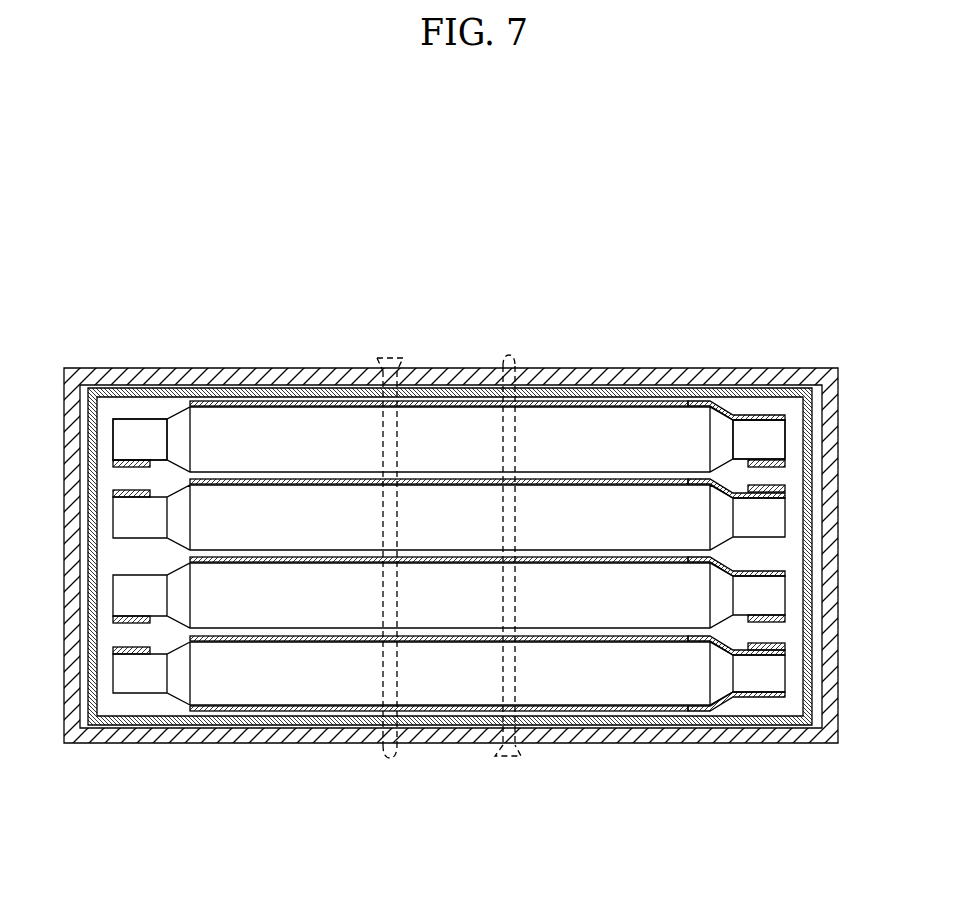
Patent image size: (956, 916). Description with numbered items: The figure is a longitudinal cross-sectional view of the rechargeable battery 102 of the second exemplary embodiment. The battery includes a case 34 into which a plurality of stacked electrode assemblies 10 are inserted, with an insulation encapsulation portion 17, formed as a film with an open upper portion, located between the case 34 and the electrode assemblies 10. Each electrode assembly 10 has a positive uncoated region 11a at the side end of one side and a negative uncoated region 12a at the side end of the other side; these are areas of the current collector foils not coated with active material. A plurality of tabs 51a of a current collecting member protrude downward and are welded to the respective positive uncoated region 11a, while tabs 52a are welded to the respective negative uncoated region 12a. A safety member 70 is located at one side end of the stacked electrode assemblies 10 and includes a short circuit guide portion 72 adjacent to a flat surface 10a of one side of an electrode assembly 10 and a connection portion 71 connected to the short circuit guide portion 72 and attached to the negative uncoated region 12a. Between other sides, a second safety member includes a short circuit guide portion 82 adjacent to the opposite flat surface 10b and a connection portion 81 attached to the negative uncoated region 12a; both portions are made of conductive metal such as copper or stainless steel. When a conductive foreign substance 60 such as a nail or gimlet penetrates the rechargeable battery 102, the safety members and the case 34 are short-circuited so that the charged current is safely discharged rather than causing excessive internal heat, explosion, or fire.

The rechargeable battery 102 is at (472, 221).
The electrode assembly 10 is at (449, 572).
The flat surface of one side of the electrode assembly 10a is at (347, 708).
The flat surface of the other side of the electrode assembly 10b is at (463, 643).
The positive uncoated region 11a is at (137, 437).
The negative uncoated region 12a is at (756, 434).
The insulation encapsulation portion 17 is at (256, 392).
The case 34 is at (237, 743).
The tab 51a is at (130, 654).
The tab 52a is at (787, 622).
The conductive foreign substance 60 is at (388, 356).
The safety member 70 is at (487, 754).
The connection portion 71 is at (743, 698).
The short circuit guide portion 72 is at (633, 712).
The connection portion 81 is at (712, 405).
The short circuit guide portion 82 is at (607, 400).